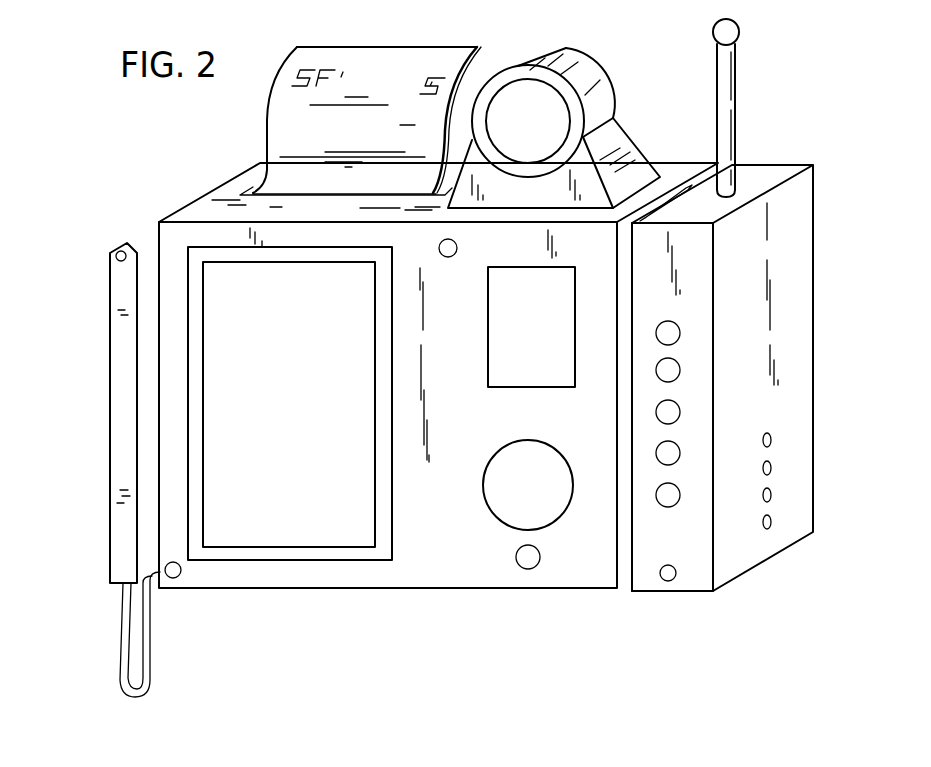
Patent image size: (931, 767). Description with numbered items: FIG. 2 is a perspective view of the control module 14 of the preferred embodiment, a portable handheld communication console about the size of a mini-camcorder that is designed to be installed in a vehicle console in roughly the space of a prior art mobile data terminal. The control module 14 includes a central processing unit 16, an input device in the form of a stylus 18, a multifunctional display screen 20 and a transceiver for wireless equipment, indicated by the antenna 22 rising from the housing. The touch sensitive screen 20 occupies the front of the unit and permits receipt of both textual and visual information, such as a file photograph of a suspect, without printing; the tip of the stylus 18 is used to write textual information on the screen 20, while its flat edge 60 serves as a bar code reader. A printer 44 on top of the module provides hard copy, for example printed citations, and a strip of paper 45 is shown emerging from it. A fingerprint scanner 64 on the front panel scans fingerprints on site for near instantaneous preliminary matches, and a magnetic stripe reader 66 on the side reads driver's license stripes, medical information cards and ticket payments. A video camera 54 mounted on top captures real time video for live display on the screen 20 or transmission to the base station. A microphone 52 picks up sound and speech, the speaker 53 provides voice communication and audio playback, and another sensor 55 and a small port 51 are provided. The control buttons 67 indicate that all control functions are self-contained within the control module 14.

The control module 14 is at (535, 410).
The central processing unit 16 is at (443, 590).
The stylus 18 is at (121, 256).
The multifunctional display screen 20 is at (267, 533).
The antenna 22 is at (722, 115).
The printer 44 is at (240, 192).
The printer paper strip 45 is at (383, 58).
The connector port 51 is at (173, 583).
The microphone 52 is at (527, 569).
The speaker 53 is at (518, 518).
The video camera 54 is at (593, 85).
The sensor 55 is at (448, 257).
The flat edge 60 is at (117, 485).
The fingerprint scanner 64 is at (565, 378).
The magnetic stripe reader 66 is at (624, 590).
The control buttons 67 is at (743, 446).